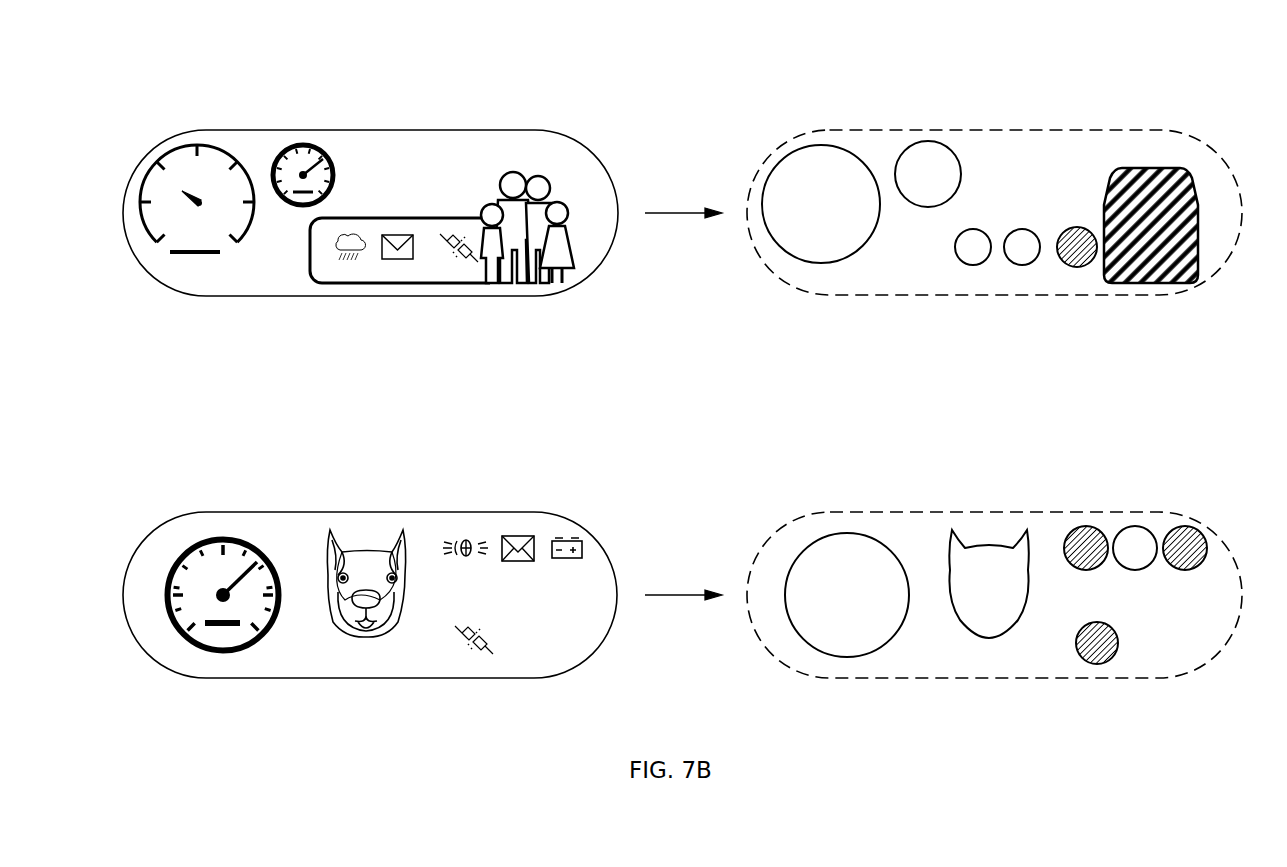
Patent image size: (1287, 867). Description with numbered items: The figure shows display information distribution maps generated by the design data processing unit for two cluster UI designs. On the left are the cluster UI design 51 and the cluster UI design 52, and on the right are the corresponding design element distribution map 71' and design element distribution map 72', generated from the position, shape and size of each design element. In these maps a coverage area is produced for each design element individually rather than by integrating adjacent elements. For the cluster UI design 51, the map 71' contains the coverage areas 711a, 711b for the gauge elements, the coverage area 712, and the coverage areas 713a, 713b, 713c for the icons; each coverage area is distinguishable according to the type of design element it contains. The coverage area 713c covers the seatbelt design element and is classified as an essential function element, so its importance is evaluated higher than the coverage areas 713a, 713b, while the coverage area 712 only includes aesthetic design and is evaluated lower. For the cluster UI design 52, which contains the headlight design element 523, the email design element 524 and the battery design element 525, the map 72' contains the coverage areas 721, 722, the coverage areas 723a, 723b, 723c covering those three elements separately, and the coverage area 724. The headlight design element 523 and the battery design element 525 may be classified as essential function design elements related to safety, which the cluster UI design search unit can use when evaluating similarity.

The cluster UI design 51 is at (229, 130).
The cluster UI design 52 is at (228, 512).
The headlight design element 523 is at (466, 540).
The email design element 524 is at (526, 538).
The battery design element 525 is at (581, 540).
The display information distribution map 71' is at (976, 205).
The coverage area 711a is at (858, 155).
The coverage area 711b is at (952, 160).
The coverage area 712 is at (1148, 168).
The coverage area 713a is at (958, 258).
The coverage area 713b is at (1008, 262).
The coverage area 713c is at (1065, 267).
The display information distribution map 72' is at (998, 595).
The coverage area 721 is at (885, 548).
The coverage area 722 is at (995, 548).
The coverage area 723a is at (1091, 527).
The coverage area 723b is at (1156, 530).
The coverage area 723c is at (1200, 535).
The coverage area 724 is at (1110, 655).